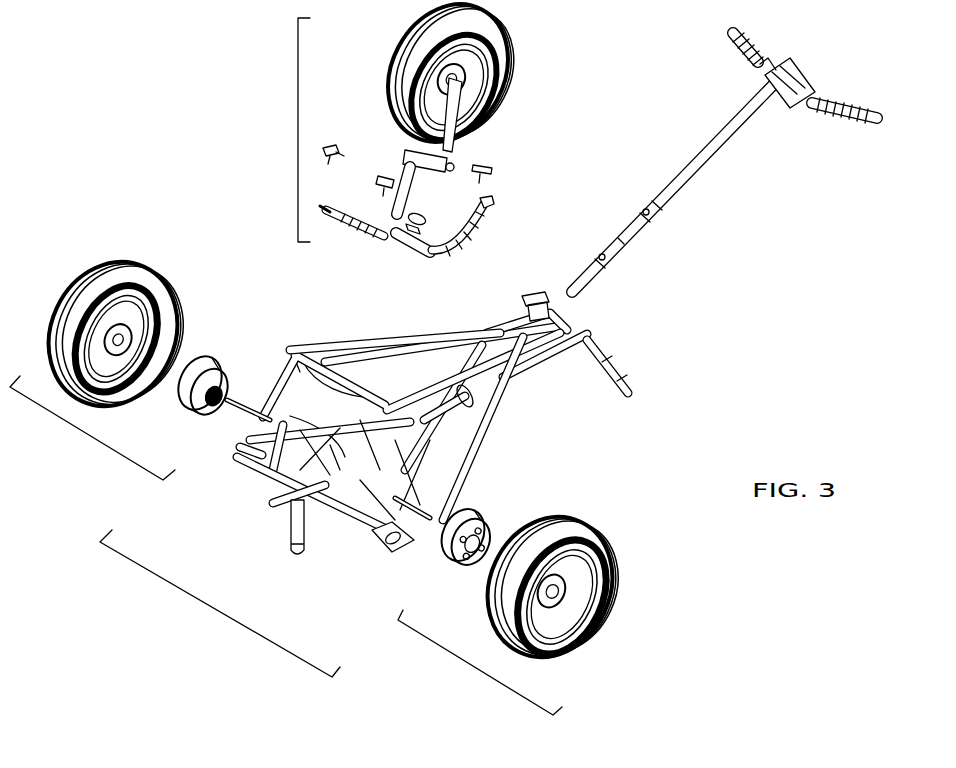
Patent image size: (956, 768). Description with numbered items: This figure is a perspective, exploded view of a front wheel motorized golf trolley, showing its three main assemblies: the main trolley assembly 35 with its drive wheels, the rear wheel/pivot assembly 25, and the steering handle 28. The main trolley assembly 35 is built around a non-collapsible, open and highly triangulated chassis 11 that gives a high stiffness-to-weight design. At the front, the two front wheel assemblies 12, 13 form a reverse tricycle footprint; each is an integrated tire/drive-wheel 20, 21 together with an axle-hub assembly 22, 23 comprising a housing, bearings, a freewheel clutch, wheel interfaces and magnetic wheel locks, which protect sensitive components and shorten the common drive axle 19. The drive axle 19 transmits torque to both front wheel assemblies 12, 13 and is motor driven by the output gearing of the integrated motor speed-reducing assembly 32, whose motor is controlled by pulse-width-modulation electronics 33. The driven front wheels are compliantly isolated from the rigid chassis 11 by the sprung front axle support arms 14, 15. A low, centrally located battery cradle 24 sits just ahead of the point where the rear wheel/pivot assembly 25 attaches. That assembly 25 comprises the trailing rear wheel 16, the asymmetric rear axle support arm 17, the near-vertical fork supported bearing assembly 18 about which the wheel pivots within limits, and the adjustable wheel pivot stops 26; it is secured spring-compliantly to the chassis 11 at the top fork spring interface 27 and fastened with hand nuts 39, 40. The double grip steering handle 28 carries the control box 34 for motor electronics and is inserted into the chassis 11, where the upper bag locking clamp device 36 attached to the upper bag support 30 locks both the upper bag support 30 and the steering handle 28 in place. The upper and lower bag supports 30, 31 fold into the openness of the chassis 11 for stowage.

The chassis 11 is at (384, 348).
The front wheel assembly 12 is at (475, 668).
The front wheel assembly 13 is at (90, 436).
The sprung front axle support arm 14 is at (390, 543).
The sprung front axle support arm 15 is at (232, 449).
The rear wheel 16 is at (498, 23).
The asymmetric rear axle support arm 17 is at (456, 166).
The fork supported bearing assembly 18 is at (414, 260).
The drive axle 19 is at (265, 481).
The tire/drive-wheel 20 is at (86, 280).
The tire/drive-wheel 21 is at (613, 554).
The axle-hub assembly 22 is at (194, 355).
The axle-hub assembly 23 is at (480, 512).
The battery cradle 24 is at (318, 400).
The rear wheel/pivot assembly 25 is at (298, 133).
The adjustable wheel pivot stops 26 is at (415, 214).
The top fork spring interface 27 is at (470, 337).
The steering handle 28 is at (690, 198).
The upper bag support 30 is at (612, 369).
The lower bag support 31 is at (297, 566).
The integrated motor speed-reducing assembly 32 is at (444, 466).
The pulse-width-modulation electronics 33 is at (472, 408).
The control box 34 is at (812, 80).
The main trolley assembly 35 is at (213, 608).
The upper bag locking clamp device 36 is at (522, 304).
The hand nut 39 is at (352, 155).
The hand nut 40 is at (382, 211).